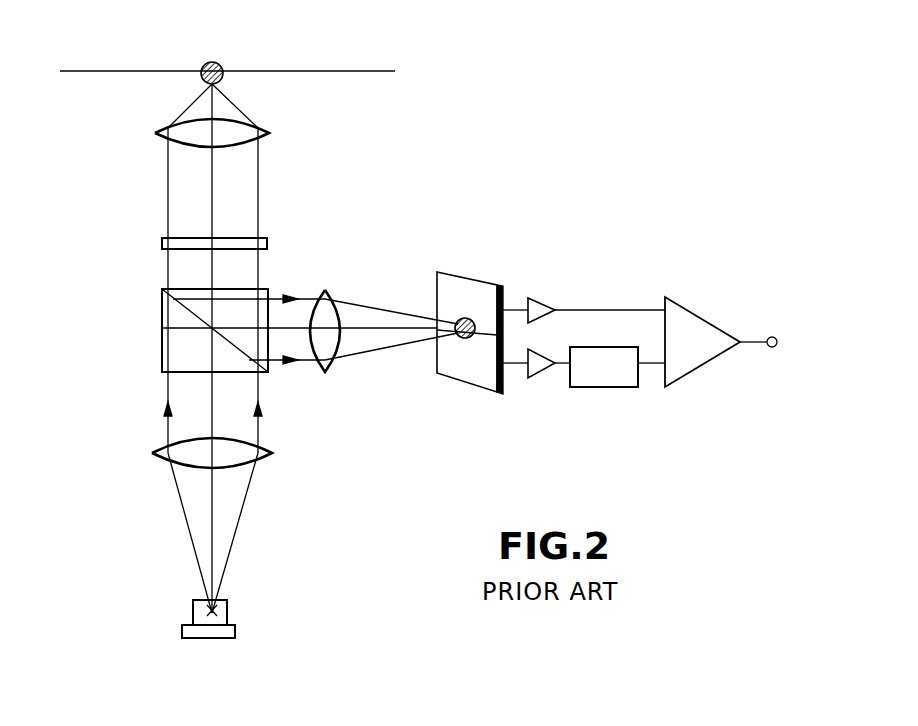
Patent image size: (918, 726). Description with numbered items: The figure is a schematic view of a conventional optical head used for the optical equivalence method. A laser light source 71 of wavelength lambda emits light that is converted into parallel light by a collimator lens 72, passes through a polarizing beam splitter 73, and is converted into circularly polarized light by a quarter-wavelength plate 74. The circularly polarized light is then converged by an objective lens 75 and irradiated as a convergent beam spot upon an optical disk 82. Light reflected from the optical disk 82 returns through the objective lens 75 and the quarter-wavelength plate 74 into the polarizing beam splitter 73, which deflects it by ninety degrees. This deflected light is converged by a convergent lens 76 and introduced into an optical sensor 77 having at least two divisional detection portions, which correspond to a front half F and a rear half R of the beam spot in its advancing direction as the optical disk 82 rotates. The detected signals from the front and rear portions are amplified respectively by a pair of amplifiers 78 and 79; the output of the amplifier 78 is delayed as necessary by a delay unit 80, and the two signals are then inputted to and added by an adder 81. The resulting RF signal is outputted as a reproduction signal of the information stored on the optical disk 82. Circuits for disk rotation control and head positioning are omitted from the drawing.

The laser light source 71 is at (227, 617).
The collimator lens 72 is at (162, 456).
The polarizing beam splitter 73 is at (162, 356).
The λ/4 plate 74 is at (166, 246).
The objective lens 75 is at (175, 136).
The convergent lens 76 is at (338, 292).
The optical sensor 77 is at (487, 282).
The amplifier 78 is at (548, 378).
The amplifier 79 is at (543, 303).
The delay unit 80 is at (607, 388).
The adder 81 is at (703, 305).
The optical disk 82 is at (358, 72).